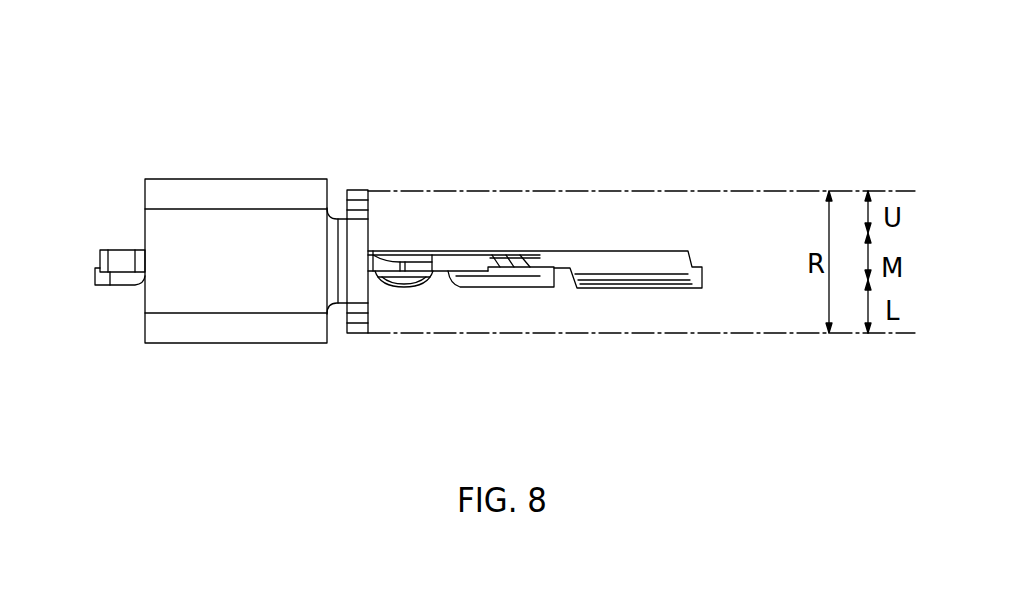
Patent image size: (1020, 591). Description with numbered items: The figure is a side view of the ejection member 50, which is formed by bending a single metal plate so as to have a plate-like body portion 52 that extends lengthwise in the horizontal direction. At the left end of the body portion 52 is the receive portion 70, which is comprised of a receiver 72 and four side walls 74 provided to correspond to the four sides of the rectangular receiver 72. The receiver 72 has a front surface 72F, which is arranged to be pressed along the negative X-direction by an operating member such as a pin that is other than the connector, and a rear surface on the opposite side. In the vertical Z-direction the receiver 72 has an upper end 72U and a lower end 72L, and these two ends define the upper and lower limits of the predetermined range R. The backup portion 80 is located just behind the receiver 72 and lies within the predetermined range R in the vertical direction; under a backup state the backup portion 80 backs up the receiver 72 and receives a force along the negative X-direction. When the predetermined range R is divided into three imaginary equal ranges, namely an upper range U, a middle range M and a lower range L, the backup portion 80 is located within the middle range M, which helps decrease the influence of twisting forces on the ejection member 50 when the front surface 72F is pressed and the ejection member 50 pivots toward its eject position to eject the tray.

The ejection member 50 is at (398, 223).
The body portion 52 is at (580, 255).
The receive portion 70 is at (221, 283).
The receiver 72 is at (426, 275).
The upper end 72U is at (353, 189).
The lower end 72L is at (352, 334).
The front surface 72F is at (344, 306).
The side walls 74 is at (199, 237).
The backup portion 80 is at (392, 265).